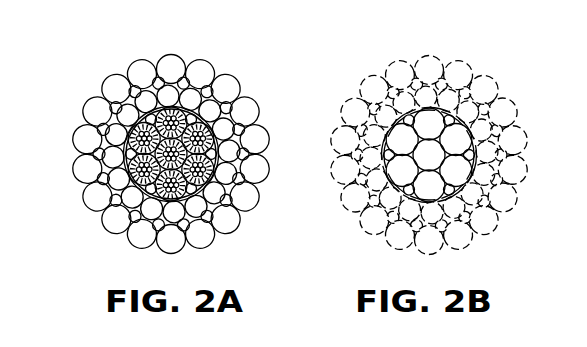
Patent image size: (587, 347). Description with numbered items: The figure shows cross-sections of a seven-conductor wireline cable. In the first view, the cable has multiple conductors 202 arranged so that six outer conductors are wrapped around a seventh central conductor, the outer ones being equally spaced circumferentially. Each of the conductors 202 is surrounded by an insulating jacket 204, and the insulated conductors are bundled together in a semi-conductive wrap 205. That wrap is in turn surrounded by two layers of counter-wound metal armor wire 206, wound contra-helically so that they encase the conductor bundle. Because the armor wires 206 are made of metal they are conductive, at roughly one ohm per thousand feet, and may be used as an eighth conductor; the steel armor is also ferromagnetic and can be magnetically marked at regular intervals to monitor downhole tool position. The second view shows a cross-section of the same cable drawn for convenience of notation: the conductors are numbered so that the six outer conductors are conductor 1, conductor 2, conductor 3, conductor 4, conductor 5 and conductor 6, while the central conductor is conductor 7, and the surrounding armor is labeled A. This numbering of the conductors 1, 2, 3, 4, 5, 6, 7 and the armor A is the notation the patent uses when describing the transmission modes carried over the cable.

In FIG. 2A, the conductors 202 is at (132, 140).
In FIG. 2A, the insulating jacket 204 is at (188, 118).
In FIG. 2A, the semi-conductive wrap 205 is at (212, 150).
In FIG. 2A, the metal armor wire 206 is at (183, 154).
In FIG. 2B, the conductor 1 is at (429, 124).
In FIG. 2B, the conductor 2 is at (456, 140).
In FIG. 2B, the conductor 3 is at (456, 171).
In FIG. 2B, the conductor 4 is at (429, 186).
In FIG. 2B, the conductor 5 is at (402, 171).
In FIG. 2B, the conductor 6 is at (402, 140).
In FIG. 2B, the conductor 7 is at (429, 155).
In FIG. 2B, the armor A is at (429, 155).